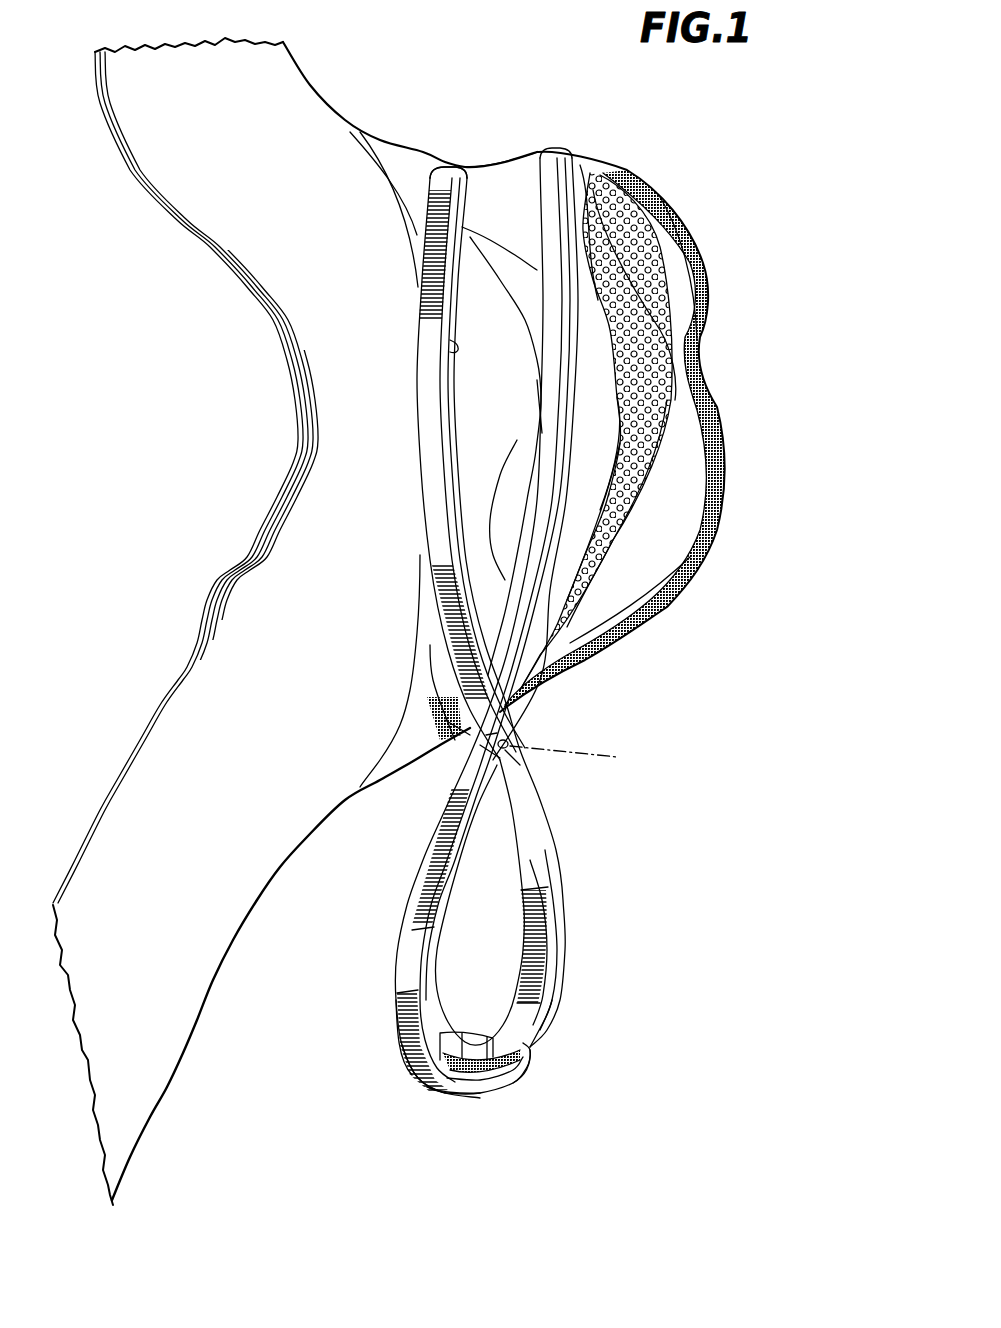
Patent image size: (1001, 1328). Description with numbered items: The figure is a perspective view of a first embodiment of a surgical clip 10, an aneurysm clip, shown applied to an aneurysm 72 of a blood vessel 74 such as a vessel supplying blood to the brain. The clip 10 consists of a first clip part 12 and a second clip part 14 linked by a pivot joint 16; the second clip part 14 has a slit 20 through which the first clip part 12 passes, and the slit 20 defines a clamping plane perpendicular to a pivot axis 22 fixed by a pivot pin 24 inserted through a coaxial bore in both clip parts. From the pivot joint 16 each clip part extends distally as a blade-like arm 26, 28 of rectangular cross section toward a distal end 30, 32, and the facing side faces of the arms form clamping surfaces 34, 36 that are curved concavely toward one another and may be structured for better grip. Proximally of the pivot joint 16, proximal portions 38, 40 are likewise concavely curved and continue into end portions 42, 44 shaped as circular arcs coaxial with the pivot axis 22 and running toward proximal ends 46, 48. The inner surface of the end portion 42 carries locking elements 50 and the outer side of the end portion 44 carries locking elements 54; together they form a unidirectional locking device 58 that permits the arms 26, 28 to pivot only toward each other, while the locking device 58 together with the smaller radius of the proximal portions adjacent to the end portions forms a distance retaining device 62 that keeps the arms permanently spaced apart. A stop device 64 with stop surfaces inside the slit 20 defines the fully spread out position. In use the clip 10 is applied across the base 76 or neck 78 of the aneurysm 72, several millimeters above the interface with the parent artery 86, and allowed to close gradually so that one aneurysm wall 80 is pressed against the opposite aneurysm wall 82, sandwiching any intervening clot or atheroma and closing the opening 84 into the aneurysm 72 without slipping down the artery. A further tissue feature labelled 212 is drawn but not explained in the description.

The surgical clip 10 is at (502, 631).
The first clip part 12 is at (410, 274).
The second clip part 14 is at (581, 185).
The pivot joint 16 is at (522, 755).
The slit 20 is at (473, 760).
The pivot axis 22 is at (617, 757).
The pivot pin 24 is at (510, 745).
The first arm 26 is at (430, 455).
The second arm 28 is at (695, 332).
The distal end 30 is at (448, 170).
The distal end 32 is at (553, 150).
The clamping surface 34 is at (456, 347).
The clamping surface 36 is at (552, 243).
The proximal portion 38 is at (410, 967).
The proximal portion 40 is at (560, 925).
The end portion 42 is at (483, 1090).
The end portion 44 is at (488, 1050).
The proximal end 46 is at (530, 1047).
The proximal end 48 is at (450, 1043).
The locking elements 50 is at (447, 1073).
The locking elements 54 is at (530, 1034).
The locking device 58 is at (530, 1083).
The distance retaining device 62 is at (456, 1108).
The stop device 64 is at (452, 749).
The aneurysm 72 is at (684, 596).
The blood vessel 74 is at (140, 1118).
The base 76 is at (425, 152).
The neck 78 is at (487, 160).
The aneurysm wall 80 is at (478, 398).
The opposite aneurysm wall 82 is at (556, 374).
The opening 84 is at (605, 440).
The parent artery 86 is at (247, 887).
The tissue layer 212 is at (597, 517).